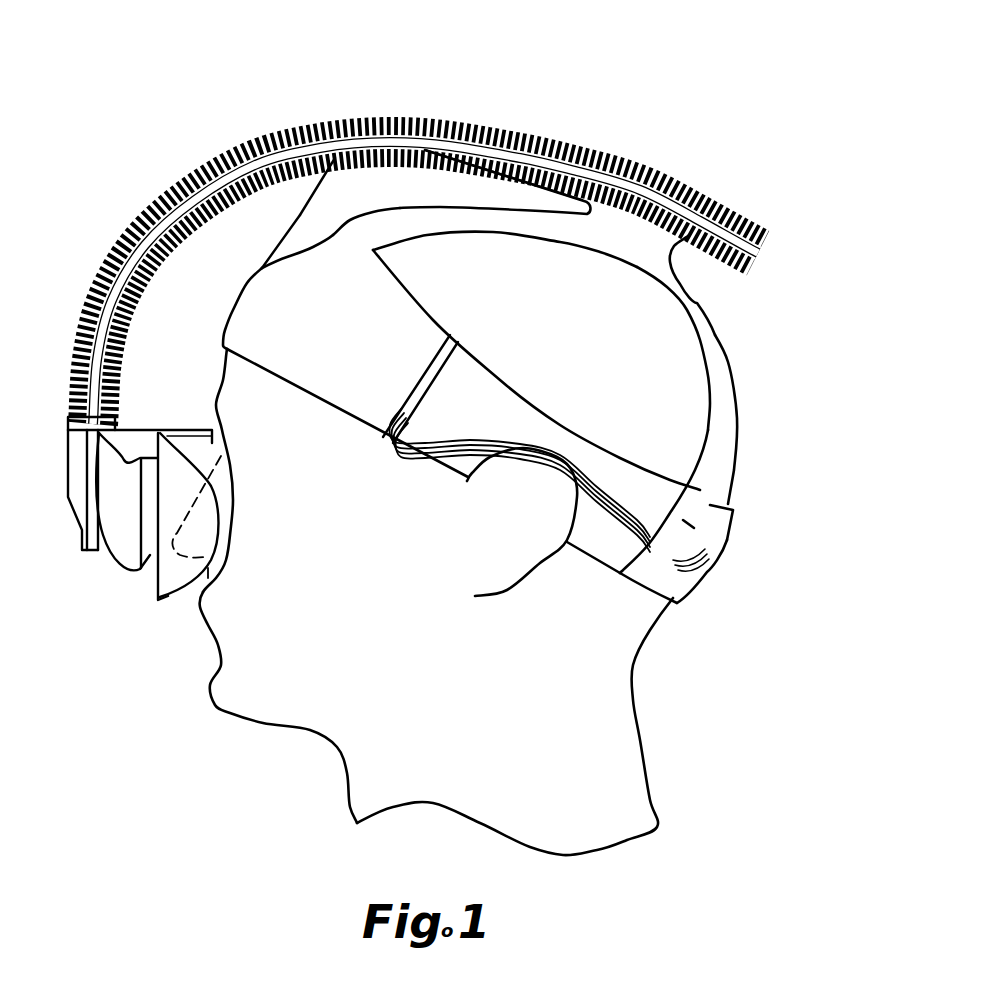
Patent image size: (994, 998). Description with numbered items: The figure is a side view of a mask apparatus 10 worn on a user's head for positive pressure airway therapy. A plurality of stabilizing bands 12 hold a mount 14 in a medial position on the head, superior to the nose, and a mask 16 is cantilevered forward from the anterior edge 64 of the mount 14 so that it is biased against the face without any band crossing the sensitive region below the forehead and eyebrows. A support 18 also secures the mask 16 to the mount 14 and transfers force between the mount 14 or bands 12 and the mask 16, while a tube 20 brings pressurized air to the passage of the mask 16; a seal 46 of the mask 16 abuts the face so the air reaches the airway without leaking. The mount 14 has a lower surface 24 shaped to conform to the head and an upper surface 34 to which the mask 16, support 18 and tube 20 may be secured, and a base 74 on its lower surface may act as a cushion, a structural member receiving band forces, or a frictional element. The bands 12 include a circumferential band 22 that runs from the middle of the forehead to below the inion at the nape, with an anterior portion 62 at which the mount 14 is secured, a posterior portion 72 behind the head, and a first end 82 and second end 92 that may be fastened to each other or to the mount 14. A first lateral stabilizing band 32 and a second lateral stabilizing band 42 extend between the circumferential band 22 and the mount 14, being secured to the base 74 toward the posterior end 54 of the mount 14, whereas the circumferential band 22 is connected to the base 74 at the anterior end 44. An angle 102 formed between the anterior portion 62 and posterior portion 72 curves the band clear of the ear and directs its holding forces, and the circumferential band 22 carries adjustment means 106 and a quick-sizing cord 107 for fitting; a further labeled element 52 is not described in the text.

The mask apparatus 10 is at (531, 109).
The stabilizing bands 12 is at (330, 372).
The mount 14 is at (320, 212).
The mask 16 is at (150, 578).
The support 18 is at (158, 203).
The tube 20 is at (297, 137).
The circumferential band 22 is at (600, 548).
The lower surface 24 is at (400, 213).
The first lateral stabilizing band 32 is at (724, 382).
The second lateral stabilizing band 42 is at (790, 408).
The upper surface 34 is at (379, 183).
The anterior end 44 is at (286, 253).
The seal 46 is at (217, 418).
The arcuate edge 52 is at (535, 236).
The posterior end 54 is at (586, 199).
The anterior portion 62 is at (243, 304).
The anterior edge 64 is at (262, 268).
The posterior portion 72 is at (687, 580).
The base 74 is at (430, 218).
The first end 82 is at (680, 293).
The second end 92 is at (684, 520).
The angle 102 is at (455, 460).
The adjustment means 106 is at (425, 380).
The quick-sizing cord 107 is at (702, 568).